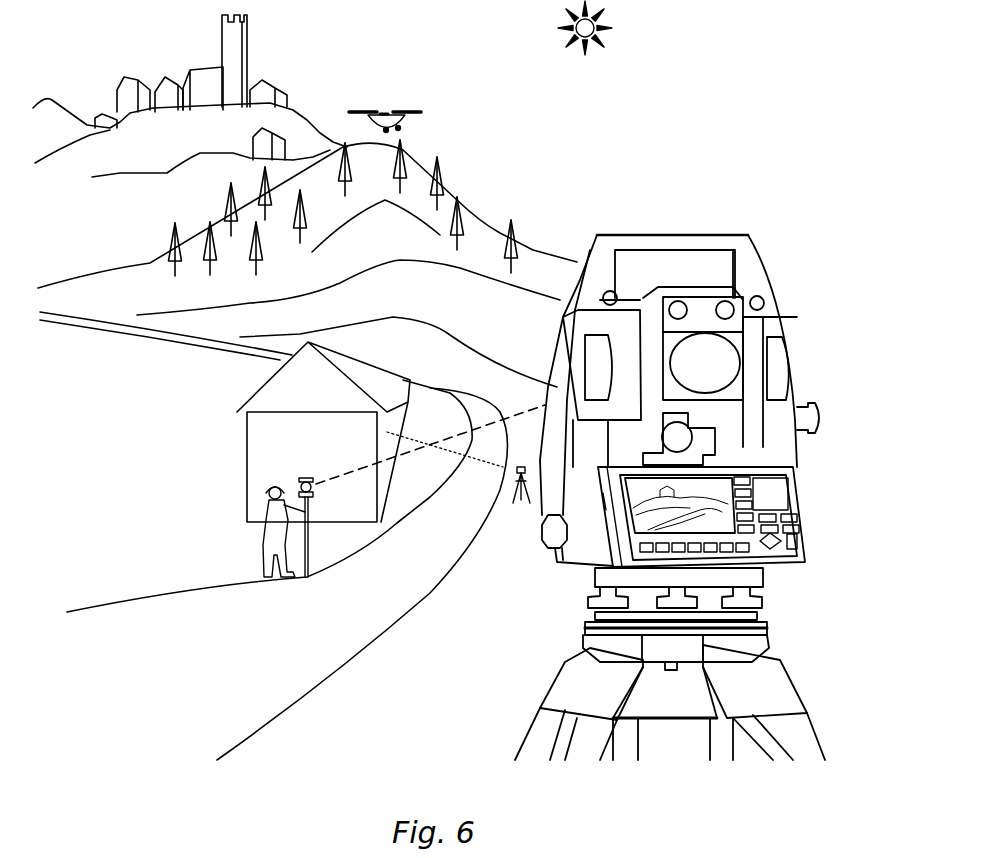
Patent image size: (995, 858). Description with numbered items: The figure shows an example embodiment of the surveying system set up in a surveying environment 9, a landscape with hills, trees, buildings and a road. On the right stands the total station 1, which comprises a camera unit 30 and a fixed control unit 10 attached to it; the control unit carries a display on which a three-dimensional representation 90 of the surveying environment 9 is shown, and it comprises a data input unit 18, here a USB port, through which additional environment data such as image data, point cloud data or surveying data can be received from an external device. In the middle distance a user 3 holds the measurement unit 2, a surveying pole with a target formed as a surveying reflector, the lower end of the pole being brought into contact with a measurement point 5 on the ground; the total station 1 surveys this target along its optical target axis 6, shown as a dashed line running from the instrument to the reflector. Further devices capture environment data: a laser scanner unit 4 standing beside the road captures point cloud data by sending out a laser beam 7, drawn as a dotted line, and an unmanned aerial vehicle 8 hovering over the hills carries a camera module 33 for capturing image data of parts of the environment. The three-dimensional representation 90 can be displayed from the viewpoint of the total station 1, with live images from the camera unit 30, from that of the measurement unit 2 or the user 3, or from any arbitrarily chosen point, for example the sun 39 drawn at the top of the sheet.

The total station 1 is at (685, 474).
The measurement unit 2 is at (294, 478).
The user 3 is at (248, 548).
The laser scanner unit 4 is at (493, 494).
The measurement point 5 is at (307, 577).
The optical target axis 6 is at (367, 467).
The laser beam 7 is at (470, 457).
The unmanned aerial vehicle 8 is at (413, 117).
The surveying environment 9 is at (497, 177).
The fixed control unit 10 is at (765, 553).
The data input unit 18 is at (600, 522).
The camera unit 30 is at (684, 307).
The camera module 33 is at (402, 128).
The sun 39 is at (623, 38).
The three-dimensional representation 90 is at (717, 487).